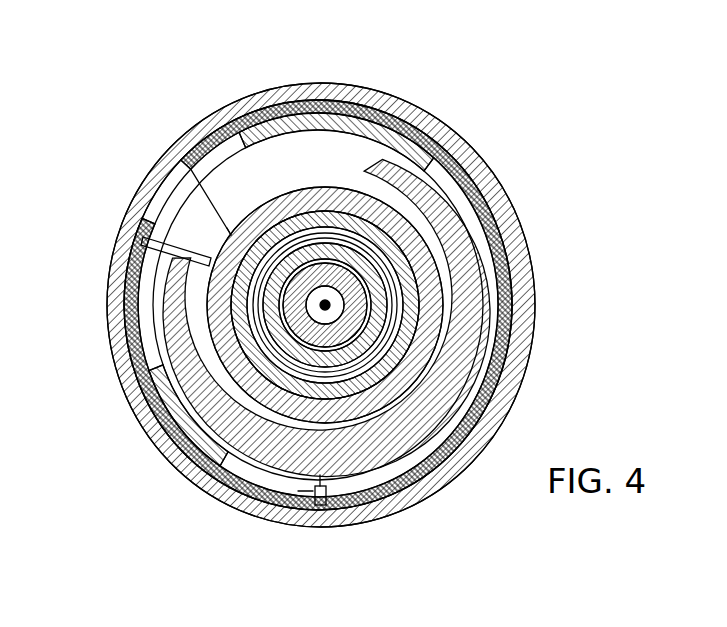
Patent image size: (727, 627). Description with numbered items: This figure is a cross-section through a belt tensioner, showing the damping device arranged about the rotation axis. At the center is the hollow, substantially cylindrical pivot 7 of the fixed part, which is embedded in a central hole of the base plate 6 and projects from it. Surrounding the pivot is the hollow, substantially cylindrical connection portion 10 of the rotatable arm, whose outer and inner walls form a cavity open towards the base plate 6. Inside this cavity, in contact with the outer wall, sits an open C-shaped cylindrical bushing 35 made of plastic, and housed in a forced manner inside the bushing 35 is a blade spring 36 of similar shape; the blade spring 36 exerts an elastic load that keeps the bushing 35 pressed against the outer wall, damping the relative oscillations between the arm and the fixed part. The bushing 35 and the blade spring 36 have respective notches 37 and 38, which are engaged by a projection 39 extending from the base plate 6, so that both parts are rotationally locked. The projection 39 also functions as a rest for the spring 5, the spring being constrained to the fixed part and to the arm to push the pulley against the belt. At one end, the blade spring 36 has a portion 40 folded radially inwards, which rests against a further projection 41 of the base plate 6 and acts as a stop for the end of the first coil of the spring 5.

The spring 5 is at (466, 350).
The base plate 6 is at (287, 150).
The pivot 7 is at (328, 270).
The connection portion 10 is at (540, 255).
The bushing 35 is at (153, 403).
The blade spring 36 is at (173, 412).
The notch 37 is at (313, 491).
The notch 38 is at (318, 505).
The projection 39 is at (247, 470).
The portion folded radially inwards 40 is at (186, 243).
The further projection 41 is at (230, 227).